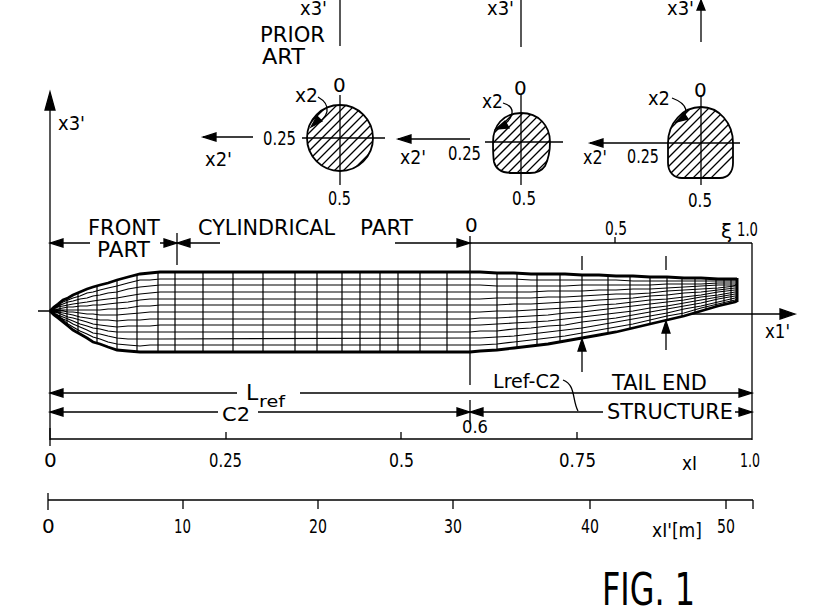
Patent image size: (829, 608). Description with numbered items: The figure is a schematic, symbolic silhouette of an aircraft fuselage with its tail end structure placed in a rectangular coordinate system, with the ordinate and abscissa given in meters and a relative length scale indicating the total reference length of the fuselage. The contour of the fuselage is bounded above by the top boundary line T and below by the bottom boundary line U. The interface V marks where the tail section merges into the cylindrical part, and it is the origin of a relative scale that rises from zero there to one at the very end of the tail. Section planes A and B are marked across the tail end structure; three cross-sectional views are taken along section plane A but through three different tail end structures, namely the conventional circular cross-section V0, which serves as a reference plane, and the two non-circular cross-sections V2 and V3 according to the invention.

The circular cross-section V0 is at (360, 120).
The tail end structure V2 is at (537, 127).
The tail end structure V3 is at (723, 107).
The top boundary line T is at (414, 272).
The bottom boundary line U is at (366, 353).
The interface V is at (460, 260).
The section plane A is at (573, 261).
The section plane B is at (657, 301).